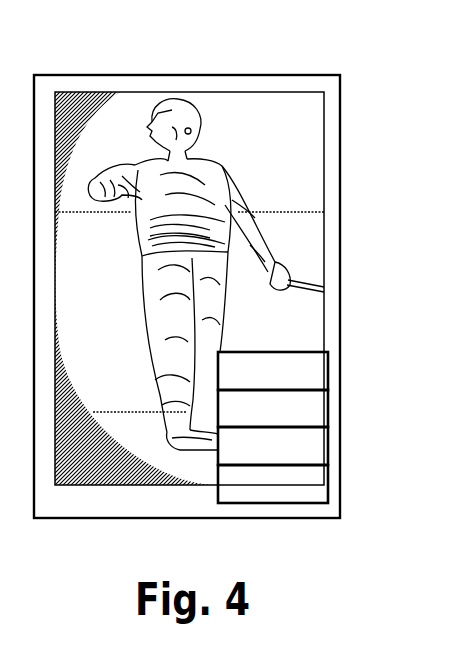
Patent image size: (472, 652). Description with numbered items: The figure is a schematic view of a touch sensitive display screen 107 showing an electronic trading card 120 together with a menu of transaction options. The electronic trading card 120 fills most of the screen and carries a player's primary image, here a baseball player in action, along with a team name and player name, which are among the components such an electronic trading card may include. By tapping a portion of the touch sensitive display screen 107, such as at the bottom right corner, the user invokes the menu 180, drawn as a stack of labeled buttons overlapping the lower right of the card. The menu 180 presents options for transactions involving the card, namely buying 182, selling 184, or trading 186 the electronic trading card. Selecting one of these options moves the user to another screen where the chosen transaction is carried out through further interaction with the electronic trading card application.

The touch sensitive display screen 107 is at (71, 70).
The electronic trading card 120 is at (234, 99).
The menu 180 is at (322, 368).
The buying option 182 is at (320, 412).
The selling option 184 is at (318, 453).
The trading option 186 is at (320, 493).